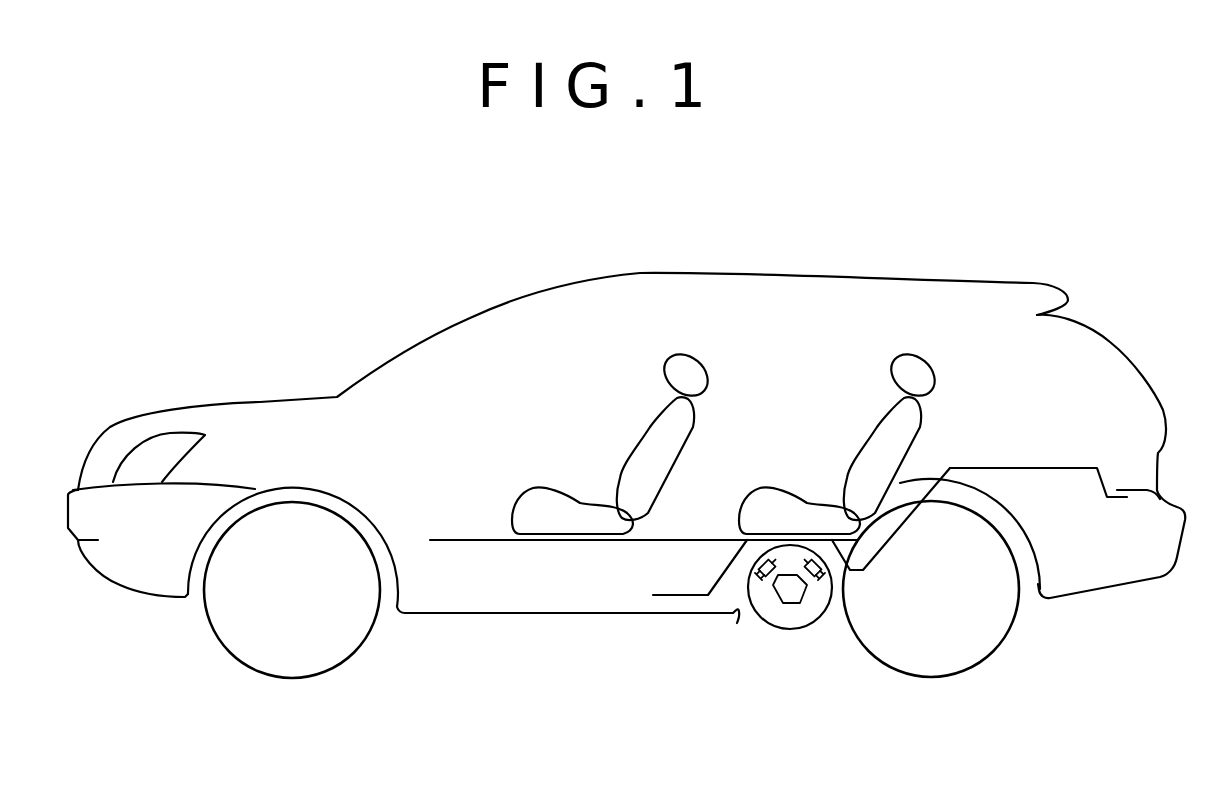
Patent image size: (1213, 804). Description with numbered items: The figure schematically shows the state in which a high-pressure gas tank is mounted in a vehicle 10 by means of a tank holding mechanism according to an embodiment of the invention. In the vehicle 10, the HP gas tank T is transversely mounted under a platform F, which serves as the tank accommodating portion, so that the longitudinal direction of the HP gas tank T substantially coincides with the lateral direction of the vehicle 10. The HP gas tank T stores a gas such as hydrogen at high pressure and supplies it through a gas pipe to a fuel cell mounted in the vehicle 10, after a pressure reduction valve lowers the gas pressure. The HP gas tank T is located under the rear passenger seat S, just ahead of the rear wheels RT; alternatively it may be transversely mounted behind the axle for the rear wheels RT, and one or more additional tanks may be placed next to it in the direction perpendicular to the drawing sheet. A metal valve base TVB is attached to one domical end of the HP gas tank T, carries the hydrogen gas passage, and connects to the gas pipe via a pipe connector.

The vehicle 10 is at (288, 215).
The platform F is at (710, 538).
The rear passenger seat S is at (770, 502).
The HP gas tank T is at (803, 618).
The valve base TVB is at (777, 596).
The rear wheels RT is at (967, 657).